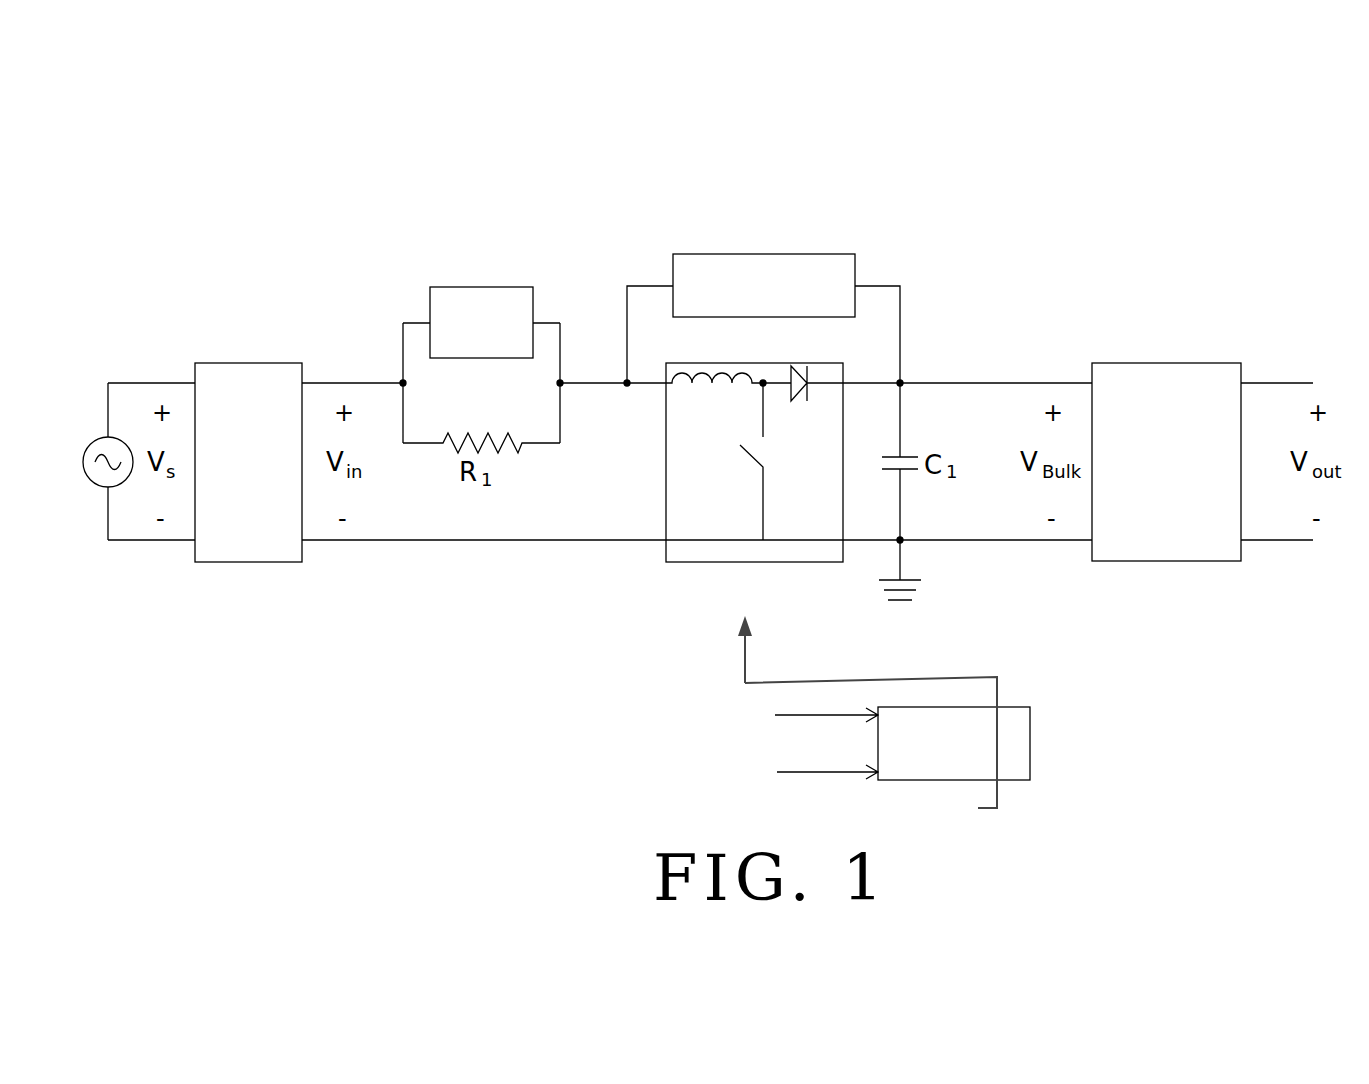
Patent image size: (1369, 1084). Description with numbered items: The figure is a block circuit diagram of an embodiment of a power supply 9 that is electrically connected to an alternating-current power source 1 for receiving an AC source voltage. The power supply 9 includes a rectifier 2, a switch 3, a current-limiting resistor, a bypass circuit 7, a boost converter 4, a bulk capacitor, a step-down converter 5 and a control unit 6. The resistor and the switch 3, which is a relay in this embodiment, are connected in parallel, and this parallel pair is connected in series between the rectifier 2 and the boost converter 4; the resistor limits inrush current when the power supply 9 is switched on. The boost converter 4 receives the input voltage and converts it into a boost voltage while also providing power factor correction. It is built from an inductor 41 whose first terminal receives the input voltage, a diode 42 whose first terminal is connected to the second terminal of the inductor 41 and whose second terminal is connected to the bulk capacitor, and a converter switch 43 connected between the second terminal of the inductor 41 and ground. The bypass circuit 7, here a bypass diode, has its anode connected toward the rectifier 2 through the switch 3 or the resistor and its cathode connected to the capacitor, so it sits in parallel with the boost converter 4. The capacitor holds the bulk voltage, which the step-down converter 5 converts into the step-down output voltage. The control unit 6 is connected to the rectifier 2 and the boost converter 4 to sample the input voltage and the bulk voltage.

The alternating-current power source 1 is at (92, 443).
The rectifier 2 is at (232, 363).
The switch 3 is at (505, 287).
The boost converter 4 is at (743, 496).
The inductor 41 is at (713, 414).
The diode 42 is at (818, 420).
The converter switch 43 is at (772, 458).
The step-down converter 5 is at (1140, 562).
The control unit 6 is at (912, 707).
The bypass circuit 7 is at (697, 254).
The power supply 9 is at (276, 185).